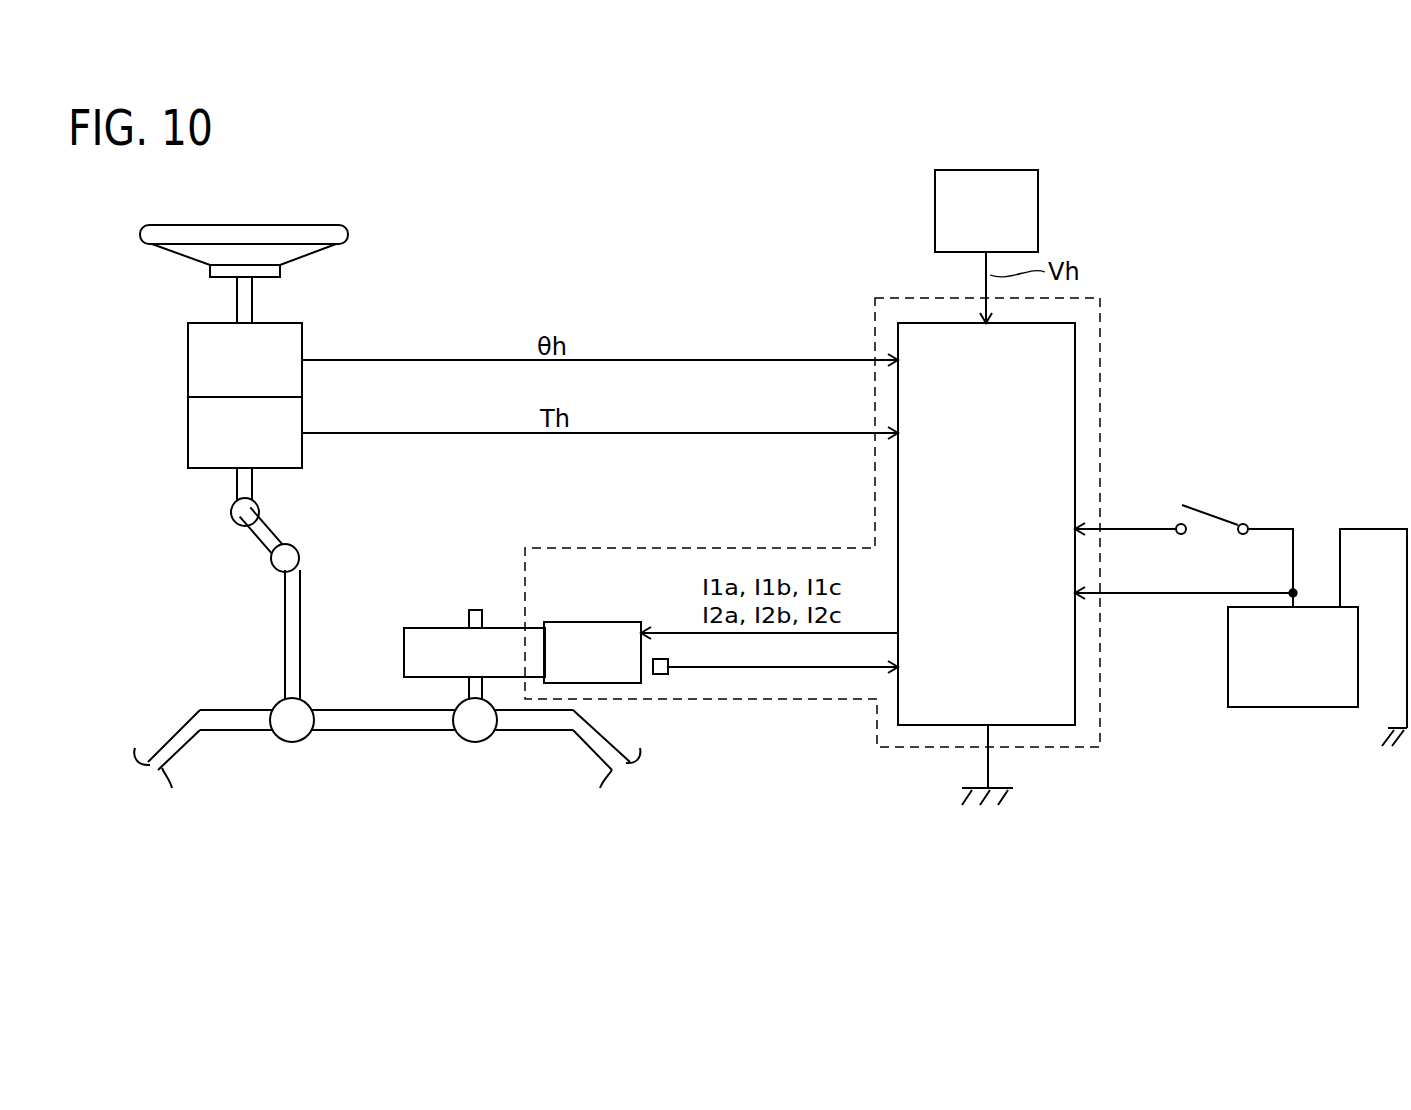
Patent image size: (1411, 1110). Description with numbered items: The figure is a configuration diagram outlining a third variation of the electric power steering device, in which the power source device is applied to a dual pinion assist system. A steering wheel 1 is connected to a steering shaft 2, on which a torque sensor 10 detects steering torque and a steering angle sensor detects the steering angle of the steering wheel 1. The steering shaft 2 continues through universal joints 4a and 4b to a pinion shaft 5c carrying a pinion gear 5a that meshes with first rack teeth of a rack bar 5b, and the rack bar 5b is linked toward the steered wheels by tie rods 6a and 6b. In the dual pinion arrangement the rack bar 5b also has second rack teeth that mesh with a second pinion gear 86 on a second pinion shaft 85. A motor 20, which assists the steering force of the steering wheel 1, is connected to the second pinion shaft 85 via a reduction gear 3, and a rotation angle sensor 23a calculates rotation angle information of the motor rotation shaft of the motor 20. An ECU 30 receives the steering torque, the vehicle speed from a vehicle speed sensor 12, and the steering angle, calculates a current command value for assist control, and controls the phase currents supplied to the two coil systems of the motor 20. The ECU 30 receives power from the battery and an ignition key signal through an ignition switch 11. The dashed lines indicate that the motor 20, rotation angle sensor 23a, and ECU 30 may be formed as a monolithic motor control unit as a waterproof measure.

The steering wheel 1 is at (332, 228).
The steering shaft 2 is at (236, 293).
The torque sensor 10 is at (187, 431).
The universal joint 4a is at (231, 510).
The universal joint 4b is at (271, 566).
The pinion shaft 5c is at (284, 650).
The pinion gear 5a is at (291, 742).
The rack bar 5b is at (356, 732).
The tie rod 6a is at (175, 745).
The tie rod 6b is at (602, 733).
The reduction gear 3 is at (420, 628).
The second pinion shaft 85 is at (465, 684).
The second pinion gear 86 is at (476, 742).
The motor 20 is at (562, 620).
The rotation angle sensor 23a is at (669, 673).
The ECU 30 is at (1077, 370).
The vehicle speed sensor 12 is at (1020, 170).
The ignition switch 11 is at (1248, 522).